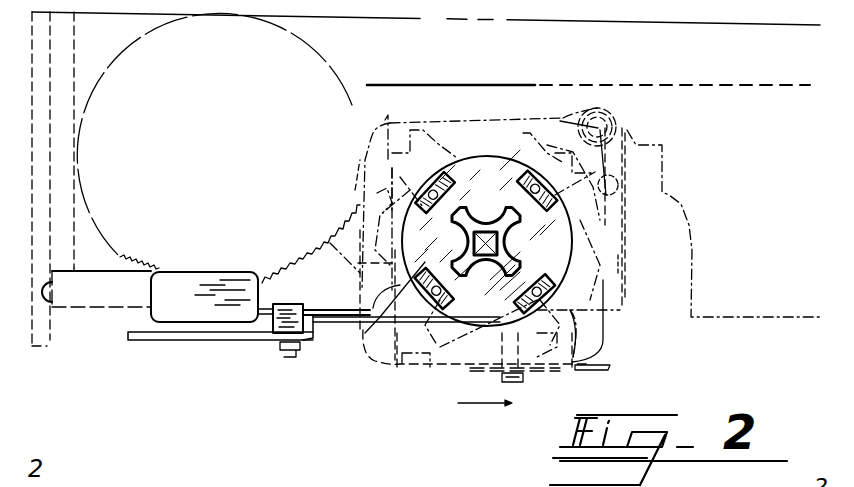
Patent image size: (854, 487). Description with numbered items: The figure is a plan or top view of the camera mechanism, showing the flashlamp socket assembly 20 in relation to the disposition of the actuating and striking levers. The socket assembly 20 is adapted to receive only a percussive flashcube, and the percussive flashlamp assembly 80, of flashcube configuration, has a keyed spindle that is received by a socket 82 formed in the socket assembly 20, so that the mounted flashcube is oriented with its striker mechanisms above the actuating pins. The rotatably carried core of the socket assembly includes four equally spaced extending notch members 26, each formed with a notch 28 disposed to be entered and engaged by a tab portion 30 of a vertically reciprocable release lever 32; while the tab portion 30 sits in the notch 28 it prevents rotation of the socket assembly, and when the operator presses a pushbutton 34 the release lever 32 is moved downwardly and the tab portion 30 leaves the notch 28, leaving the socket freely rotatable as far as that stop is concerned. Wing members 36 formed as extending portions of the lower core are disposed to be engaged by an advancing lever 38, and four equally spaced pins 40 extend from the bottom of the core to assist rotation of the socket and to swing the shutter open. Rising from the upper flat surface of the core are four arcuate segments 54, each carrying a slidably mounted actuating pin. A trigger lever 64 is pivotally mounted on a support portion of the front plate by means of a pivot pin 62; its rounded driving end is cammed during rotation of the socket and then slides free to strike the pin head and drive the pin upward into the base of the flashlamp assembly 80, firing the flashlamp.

The flashlamp socket assembly 20 is at (672, 320).
The notch member 26 is at (533, 378).
The notch 28 is at (575, 366).
The tab portion 30 is at (360, 337).
The release lever 32 is at (335, 285).
The pushbutton 34 is at (195, 303).
The wing member 36 is at (618, 265).
The advancing lever 38 is at (333, 235).
The pin 40 is at (605, 167).
The arcuate segment 54 is at (478, 217).
The pivot pin 62 is at (290, 358).
The trigger lever 64 is at (222, 340).
The percussive flashlamp assembly 80 is at (380, 127).
The socket 82 is at (482, 218).